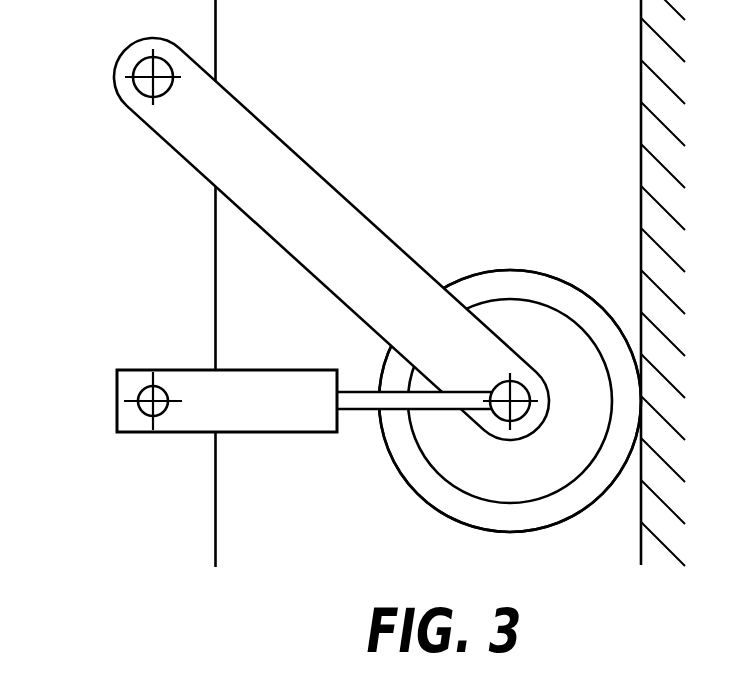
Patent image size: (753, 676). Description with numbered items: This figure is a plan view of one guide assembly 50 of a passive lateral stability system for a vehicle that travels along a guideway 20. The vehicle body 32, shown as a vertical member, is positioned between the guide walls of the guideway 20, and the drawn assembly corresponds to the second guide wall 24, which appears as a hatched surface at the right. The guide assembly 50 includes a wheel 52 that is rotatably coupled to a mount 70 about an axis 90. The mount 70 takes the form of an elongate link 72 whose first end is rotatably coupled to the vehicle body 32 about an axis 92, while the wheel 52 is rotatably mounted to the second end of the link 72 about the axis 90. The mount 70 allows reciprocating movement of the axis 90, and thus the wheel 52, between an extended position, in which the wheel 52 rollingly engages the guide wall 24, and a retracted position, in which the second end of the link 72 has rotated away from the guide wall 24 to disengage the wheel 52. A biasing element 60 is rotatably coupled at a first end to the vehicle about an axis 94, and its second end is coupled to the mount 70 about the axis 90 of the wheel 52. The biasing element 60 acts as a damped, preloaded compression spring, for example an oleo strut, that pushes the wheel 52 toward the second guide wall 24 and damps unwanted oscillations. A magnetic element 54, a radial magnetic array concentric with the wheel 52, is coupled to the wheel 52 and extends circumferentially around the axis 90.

The guideway 20 is at (599, 283).
The second guide wall 24 is at (641, 106).
The vehicle body 32 is at (216, 22).
The guide assembly 50 is at (502, 348).
The wheel 52 is at (497, 269).
The magnetic element 54 is at (543, 305).
The biasing element 60 is at (275, 432).
The mount 70 is at (331, 239).
The elongate link 72 is at (197, 172).
The axis 90 is at (500, 415).
The axis 92 is at (143, 67).
The axis 94 is at (146, 412).